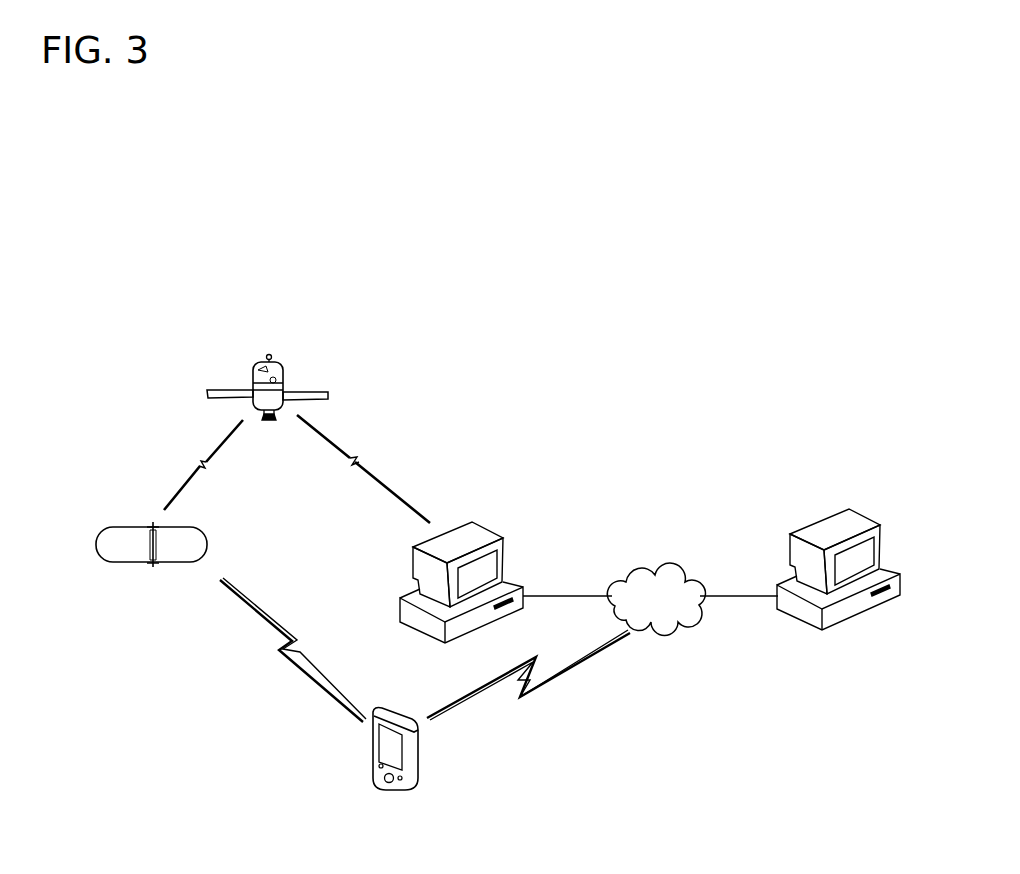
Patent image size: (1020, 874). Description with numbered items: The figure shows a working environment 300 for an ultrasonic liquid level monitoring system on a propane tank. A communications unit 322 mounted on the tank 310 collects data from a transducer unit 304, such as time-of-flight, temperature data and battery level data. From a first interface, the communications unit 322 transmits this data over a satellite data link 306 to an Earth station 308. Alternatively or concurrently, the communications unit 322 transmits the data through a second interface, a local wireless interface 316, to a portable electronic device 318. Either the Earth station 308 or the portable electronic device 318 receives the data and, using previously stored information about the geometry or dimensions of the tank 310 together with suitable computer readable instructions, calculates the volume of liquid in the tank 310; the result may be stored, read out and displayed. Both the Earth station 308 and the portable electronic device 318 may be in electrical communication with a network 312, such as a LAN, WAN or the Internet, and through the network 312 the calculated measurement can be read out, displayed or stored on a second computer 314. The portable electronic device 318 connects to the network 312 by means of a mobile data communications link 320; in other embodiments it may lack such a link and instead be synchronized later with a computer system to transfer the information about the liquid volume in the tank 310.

The working environment 300 is at (158, 328).
The transducer unit 304 is at (152, 568).
The satellite data link 306 is at (278, 356).
The Earth station 308 is at (478, 538).
The tank 310 is at (203, 548).
The network 312 is at (675, 567).
The second computer 314 is at (857, 523).
The local wireless interface 316 is at (283, 632).
The portable electronic device 318 is at (422, 772).
The mobile data communications link 320 is at (545, 702).
The communications unit 322 is at (152, 522).